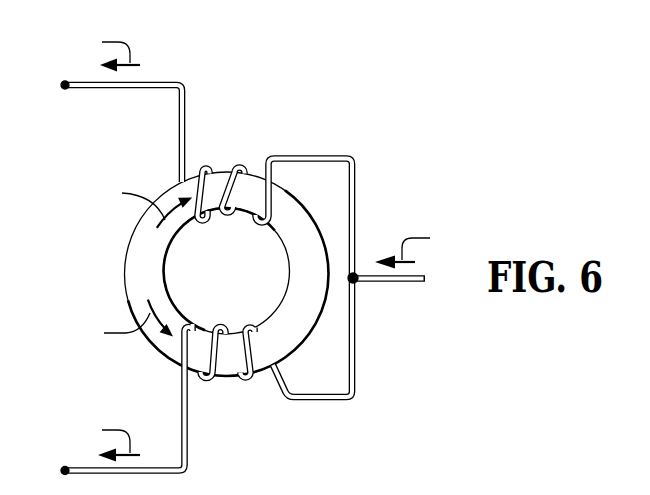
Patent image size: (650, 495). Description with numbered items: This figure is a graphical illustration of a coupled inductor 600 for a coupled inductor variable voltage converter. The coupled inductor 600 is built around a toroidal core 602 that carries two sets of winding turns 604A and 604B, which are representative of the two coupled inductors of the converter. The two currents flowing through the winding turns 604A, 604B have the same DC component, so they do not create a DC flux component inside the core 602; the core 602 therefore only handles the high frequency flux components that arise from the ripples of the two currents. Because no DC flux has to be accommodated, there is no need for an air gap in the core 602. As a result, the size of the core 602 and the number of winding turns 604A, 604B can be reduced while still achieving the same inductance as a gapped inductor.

The coupled inductor 600 is at (250, 254).
The core 602 is at (124, 273).
The winding turns 604A is at (243, 167).
The winding turns 604B is at (204, 385).